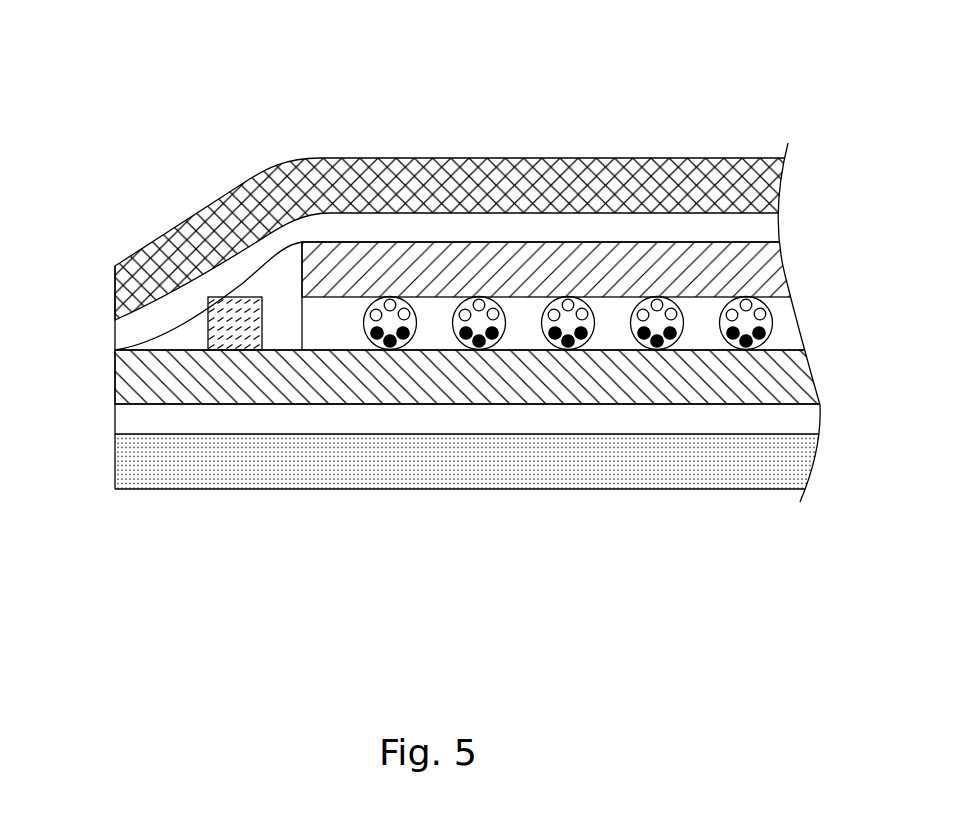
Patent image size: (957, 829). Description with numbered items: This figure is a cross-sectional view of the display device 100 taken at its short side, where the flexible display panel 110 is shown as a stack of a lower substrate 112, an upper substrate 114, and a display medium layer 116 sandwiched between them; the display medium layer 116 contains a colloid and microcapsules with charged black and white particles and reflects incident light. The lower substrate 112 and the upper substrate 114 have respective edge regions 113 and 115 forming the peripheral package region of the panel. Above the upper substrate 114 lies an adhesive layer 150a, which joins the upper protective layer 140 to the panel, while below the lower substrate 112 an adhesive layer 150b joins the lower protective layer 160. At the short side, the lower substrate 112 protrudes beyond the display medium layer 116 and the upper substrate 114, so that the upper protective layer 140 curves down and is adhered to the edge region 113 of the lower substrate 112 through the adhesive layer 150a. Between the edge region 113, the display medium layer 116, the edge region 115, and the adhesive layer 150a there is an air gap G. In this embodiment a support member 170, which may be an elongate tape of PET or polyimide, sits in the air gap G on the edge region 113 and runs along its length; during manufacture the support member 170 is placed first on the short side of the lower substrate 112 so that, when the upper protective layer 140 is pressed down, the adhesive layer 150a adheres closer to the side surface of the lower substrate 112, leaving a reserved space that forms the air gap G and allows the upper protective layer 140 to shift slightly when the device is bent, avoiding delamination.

The display device 100 is at (35, 70).
The flexible display panel 110 is at (878, 248).
The lower substrate 112 is at (813, 382).
The edge region 113 is at (137, 386).
The upper substrate 114 is at (780, 273).
The edge region 115 is at (331, 271).
The display medium layer 116 is at (788, 327).
The upper protective layer 140 is at (545, 177).
The adhesive layer 150a is at (642, 228).
The adhesive layer 150b is at (643, 415).
The lower protective layer 160 is at (550, 468).
The support member 170 is at (227, 308).
The air gap G is at (275, 280).